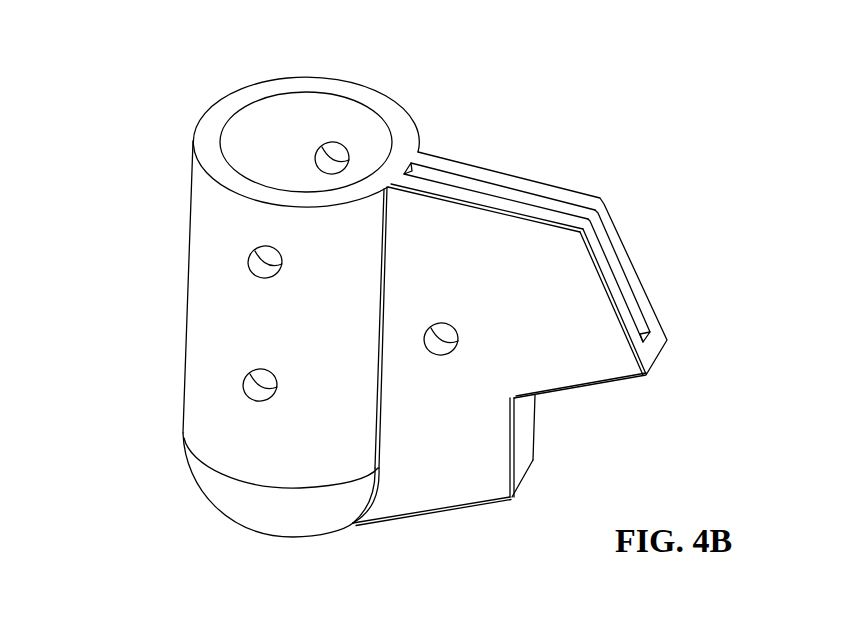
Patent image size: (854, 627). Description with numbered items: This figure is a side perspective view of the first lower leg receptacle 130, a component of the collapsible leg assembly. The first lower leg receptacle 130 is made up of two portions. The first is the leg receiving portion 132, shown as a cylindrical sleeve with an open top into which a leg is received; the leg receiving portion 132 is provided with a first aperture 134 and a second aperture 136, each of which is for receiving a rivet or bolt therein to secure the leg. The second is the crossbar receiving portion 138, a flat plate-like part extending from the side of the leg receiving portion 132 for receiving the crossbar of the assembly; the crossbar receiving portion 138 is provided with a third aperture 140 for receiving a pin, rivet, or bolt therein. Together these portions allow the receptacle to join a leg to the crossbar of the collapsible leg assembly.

The first lower leg receptacle 130 is at (172, 192).
The leg receiving portion 132 is at (190, 340).
The first aperture 134 is at (333, 142).
The second aperture 136 is at (243, 390).
The crossbar receiving portion 138 is at (452, 470).
The third aperture 140 is at (452, 352).